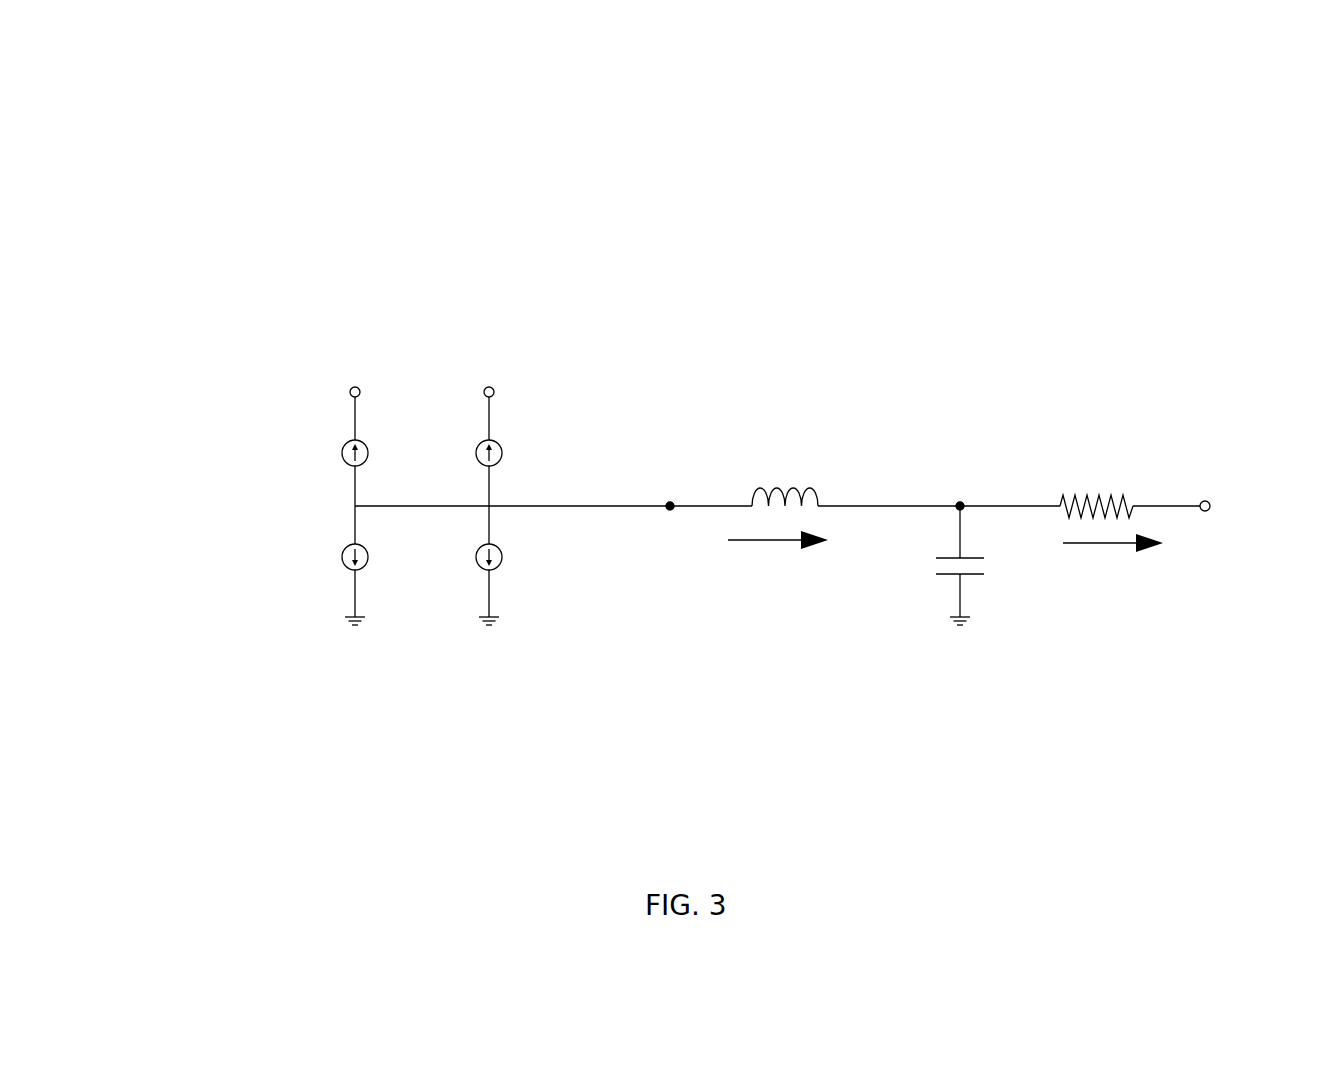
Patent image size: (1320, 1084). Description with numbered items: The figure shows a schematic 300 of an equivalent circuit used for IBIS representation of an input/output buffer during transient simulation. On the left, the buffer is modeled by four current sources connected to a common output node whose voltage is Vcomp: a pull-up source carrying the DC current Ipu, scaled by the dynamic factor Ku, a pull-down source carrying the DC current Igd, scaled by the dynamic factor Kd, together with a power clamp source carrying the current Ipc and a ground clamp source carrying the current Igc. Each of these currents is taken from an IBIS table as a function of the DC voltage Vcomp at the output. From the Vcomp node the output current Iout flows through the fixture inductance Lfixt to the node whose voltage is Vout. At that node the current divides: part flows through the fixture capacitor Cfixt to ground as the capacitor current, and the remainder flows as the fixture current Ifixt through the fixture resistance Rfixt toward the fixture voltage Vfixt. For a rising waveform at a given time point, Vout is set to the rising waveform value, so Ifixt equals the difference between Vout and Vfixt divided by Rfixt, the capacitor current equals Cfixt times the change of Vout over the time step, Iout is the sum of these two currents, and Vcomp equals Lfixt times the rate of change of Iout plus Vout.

The schematic 300 is at (217, 131).
The pull-up DC current Ipu is at (261, 440).
The pull-down DC current Igd is at (262, 573).
The power clamp DC current Ipc is at (546, 440).
The ground clamp DC current Igc is at (541, 570).
The output DC voltage Vcomp is at (660, 483).
The output voltage Vout is at (950, 486).
The fixture inductance Lfixt is at (783, 475).
The fixture capacitor Cfixt is at (927, 565).
The fixture resistance Rfixt is at (1096, 484).
The output current Iout is at (778, 558).
The fixture current Ifixt is at (1113, 560).
The fixture voltage Vfixt is at (1214, 487).